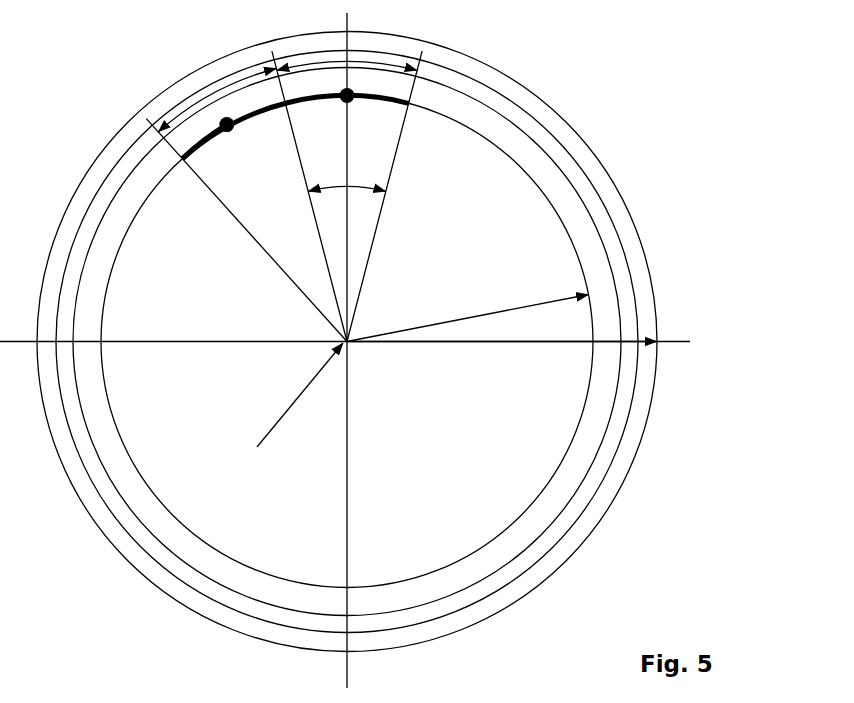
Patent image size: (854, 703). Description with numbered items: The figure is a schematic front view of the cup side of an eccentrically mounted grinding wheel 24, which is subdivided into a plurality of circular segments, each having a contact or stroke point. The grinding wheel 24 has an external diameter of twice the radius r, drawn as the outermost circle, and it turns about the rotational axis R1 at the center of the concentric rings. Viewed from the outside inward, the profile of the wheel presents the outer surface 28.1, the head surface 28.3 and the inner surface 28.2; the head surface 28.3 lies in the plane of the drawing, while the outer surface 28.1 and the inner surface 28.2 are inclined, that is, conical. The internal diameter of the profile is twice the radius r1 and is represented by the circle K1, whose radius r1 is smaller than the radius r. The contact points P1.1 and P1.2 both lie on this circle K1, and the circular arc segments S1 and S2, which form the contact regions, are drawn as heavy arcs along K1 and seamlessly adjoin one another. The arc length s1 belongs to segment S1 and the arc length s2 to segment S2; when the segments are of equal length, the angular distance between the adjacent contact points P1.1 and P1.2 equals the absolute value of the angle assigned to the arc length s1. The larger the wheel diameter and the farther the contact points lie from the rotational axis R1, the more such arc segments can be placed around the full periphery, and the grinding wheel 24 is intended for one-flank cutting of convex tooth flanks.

The grinding wheel 24 is at (627, 67).
The outer surface 28.1 is at (642, 395).
The inner surface 28.2 is at (522, 530).
The head surface 28.3 is at (477, 587).
The circle K1 is at (553, 480).
The circular arc segment S1 is at (308, 103).
The circular arc segment S2 is at (193, 162).
The contact point P1.1 is at (368, 106).
The contact point P1.2 is at (250, 129).
The circular arc length s1 is at (377, 68).
The circular arc length s2 is at (178, 118).
The radius r1 is at (468, 313).
The radius r is at (502, 355).
The rotational axis R1 is at (292, 408).